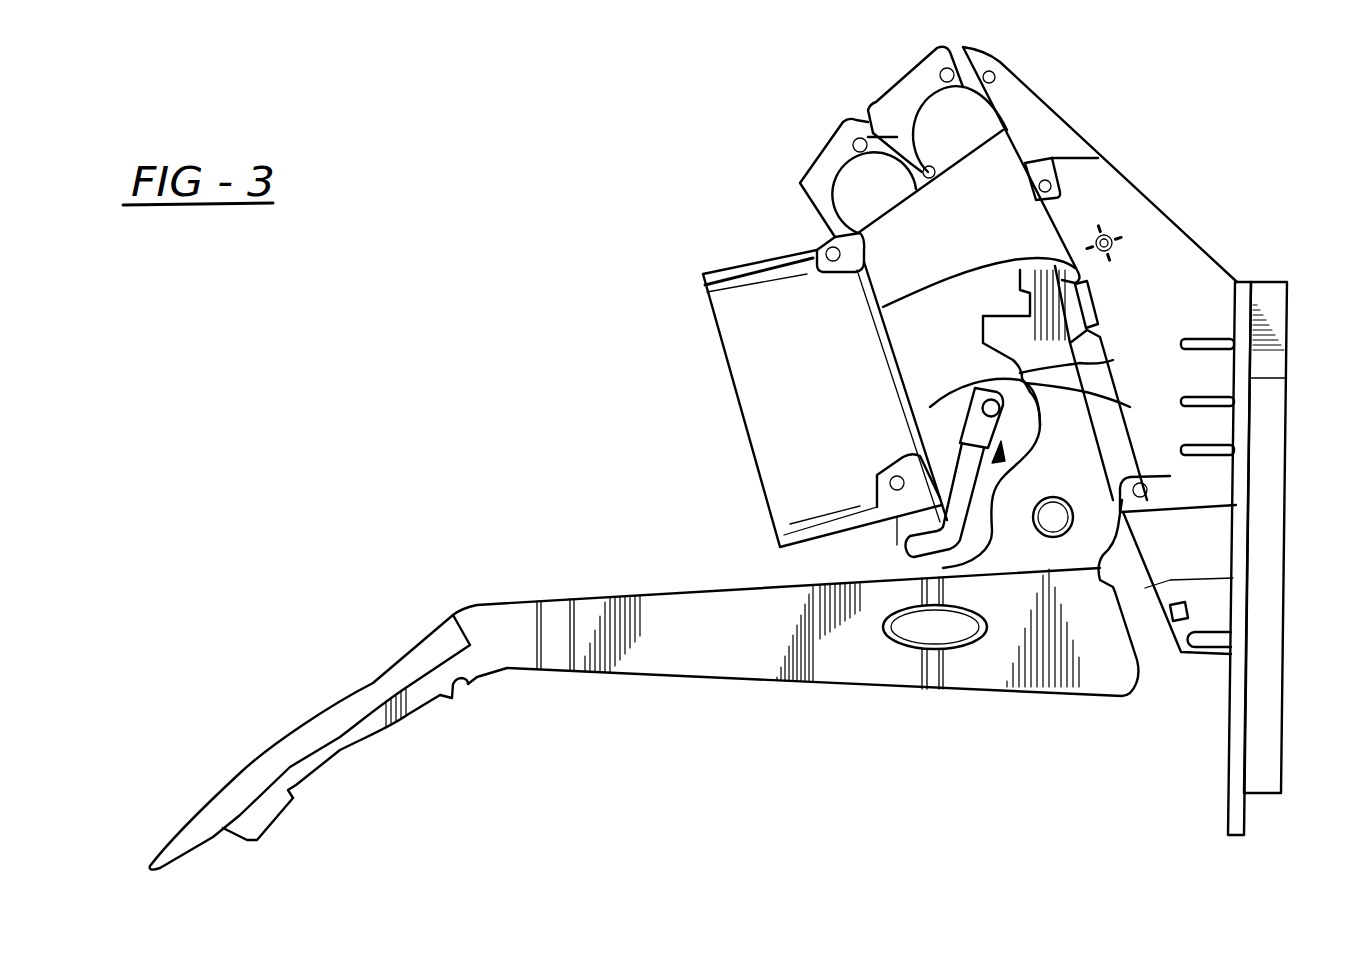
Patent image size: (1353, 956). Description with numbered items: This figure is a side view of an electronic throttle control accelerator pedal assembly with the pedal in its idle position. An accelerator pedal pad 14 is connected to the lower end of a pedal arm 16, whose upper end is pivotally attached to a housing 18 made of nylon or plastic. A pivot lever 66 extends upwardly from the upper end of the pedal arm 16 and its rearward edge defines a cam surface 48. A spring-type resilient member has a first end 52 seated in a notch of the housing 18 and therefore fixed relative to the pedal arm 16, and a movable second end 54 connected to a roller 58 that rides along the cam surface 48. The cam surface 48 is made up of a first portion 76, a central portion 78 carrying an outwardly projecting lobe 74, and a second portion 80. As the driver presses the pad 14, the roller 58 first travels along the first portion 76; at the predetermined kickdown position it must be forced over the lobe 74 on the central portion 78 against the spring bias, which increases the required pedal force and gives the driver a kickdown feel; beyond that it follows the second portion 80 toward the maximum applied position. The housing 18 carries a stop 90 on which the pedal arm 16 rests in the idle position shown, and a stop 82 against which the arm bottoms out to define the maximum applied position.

The accelerator pedal pad 14 is at (327, 707).
The pedal arm 16 is at (760, 660).
The housing 18 is at (817, 163).
The cam surface 48 is at (997, 463).
The first end 52 is at (897, 557).
The second end 54 is at (962, 445).
The roller 58 is at (983, 403).
The pivot lever 66 is at (1130, 477).
The lobe 74 is at (1020, 370).
The first portion 76 is at (1047, 425).
The central portion 78 is at (1113, 406).
The second portion 80 is at (1100, 357).
The stop 82 is at (1165, 625).
The stop 90 is at (1100, 300).